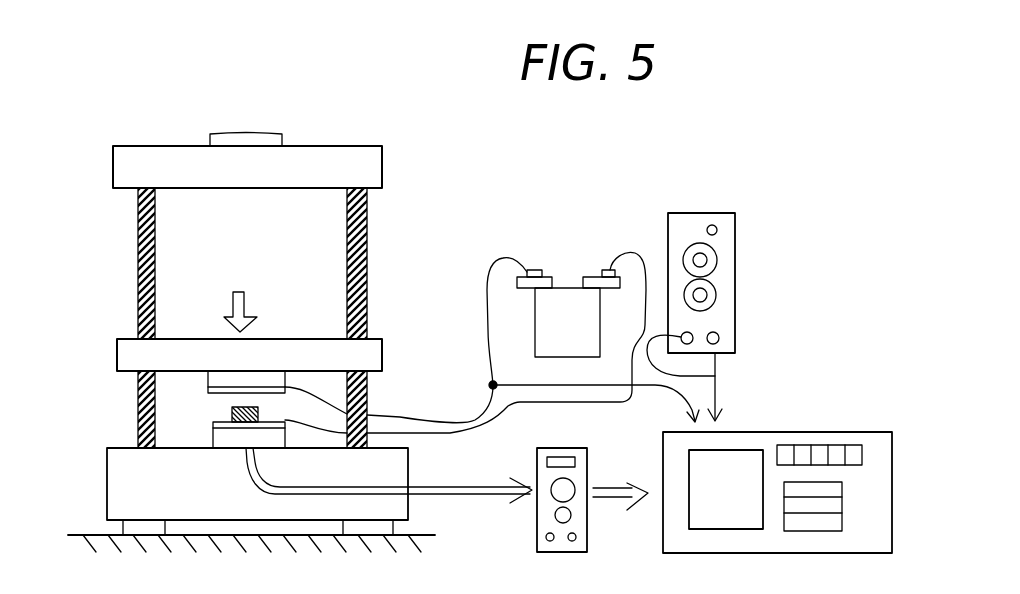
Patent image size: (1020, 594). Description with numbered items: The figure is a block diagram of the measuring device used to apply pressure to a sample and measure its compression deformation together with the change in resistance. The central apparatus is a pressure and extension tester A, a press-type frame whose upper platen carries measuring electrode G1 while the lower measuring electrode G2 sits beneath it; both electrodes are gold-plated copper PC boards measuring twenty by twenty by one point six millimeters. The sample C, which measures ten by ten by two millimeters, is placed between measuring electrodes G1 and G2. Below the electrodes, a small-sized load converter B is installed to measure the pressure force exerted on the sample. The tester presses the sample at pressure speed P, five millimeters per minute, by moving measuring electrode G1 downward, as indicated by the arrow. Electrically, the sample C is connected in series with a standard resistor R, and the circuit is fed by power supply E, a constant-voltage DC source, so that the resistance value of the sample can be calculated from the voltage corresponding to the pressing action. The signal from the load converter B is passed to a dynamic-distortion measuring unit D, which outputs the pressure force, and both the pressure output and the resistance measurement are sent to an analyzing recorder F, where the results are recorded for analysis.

The pressure and extension tester A is at (307, 143).
The pressure speed P is at (240, 291).
The measuring electrode G1 is at (223, 388).
The sample C is at (232, 413).
The measuring electrode G2 is at (217, 434).
The small-sized load converter B is at (242, 437).
The standard resistor R is at (563, 283).
The power supply E is at (697, 213).
The dynamic-distortion measuring unit D is at (581, 447).
The analyzing recorder F is at (783, 438).